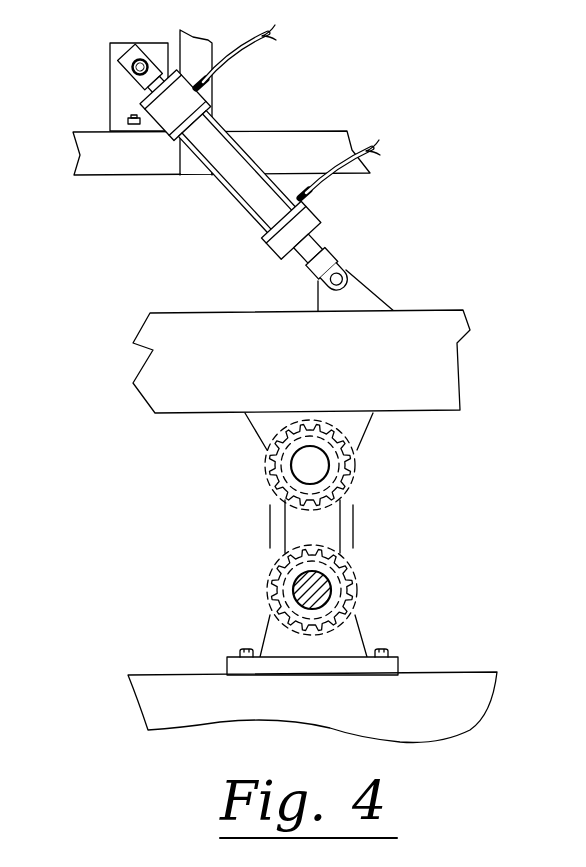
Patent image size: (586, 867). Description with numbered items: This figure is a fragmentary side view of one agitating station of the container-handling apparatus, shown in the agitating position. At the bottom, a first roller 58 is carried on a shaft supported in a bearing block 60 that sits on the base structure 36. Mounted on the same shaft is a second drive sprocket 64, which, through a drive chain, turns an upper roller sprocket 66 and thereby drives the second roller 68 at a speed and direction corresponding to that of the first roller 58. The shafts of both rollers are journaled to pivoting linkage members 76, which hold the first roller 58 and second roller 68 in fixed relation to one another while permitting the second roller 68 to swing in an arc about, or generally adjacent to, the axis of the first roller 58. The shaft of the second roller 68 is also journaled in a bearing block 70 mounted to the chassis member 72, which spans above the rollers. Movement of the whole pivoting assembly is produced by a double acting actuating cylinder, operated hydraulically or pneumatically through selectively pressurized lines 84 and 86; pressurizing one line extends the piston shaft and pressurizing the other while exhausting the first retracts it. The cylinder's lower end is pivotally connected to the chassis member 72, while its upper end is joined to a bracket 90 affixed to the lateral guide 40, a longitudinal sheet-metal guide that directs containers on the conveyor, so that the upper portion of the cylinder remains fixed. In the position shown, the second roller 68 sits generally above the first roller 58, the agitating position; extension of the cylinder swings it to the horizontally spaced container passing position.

The frame base plate 36 is at (477, 698).
The lateral guide 40 is at (130, 167).
The first roller 58 is at (260, 590).
The bearing block 60 is at (278, 643).
The second drive sprocket 64 is at (350, 580).
The upper roller sprocket 66 is at (350, 477).
The second roller 68 is at (260, 467).
The bearing block 70 is at (250, 425).
The chassis member 72 is at (160, 382).
The pivoting linkage member 76 is at (333, 523).
The input line 84 is at (250, 48).
The output line 86 is at (330, 128).
The bracket 90 is at (118, 105).